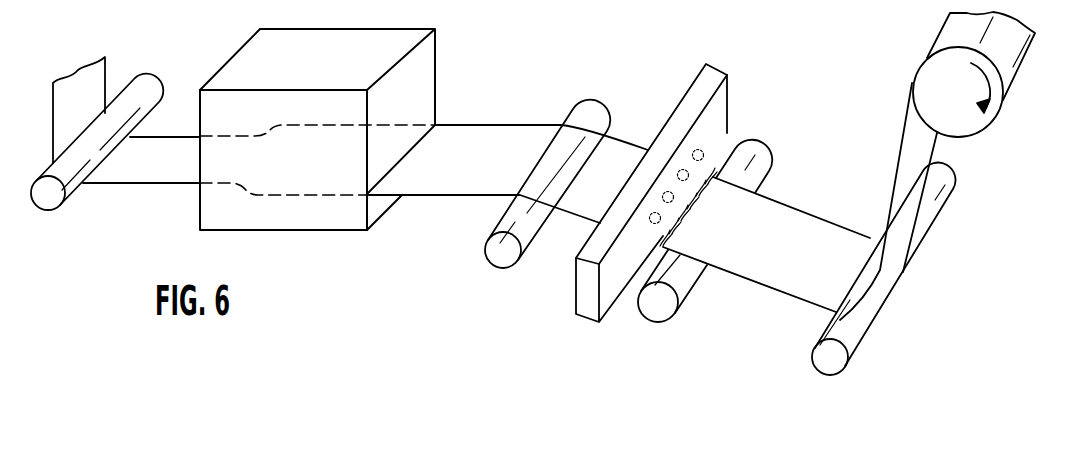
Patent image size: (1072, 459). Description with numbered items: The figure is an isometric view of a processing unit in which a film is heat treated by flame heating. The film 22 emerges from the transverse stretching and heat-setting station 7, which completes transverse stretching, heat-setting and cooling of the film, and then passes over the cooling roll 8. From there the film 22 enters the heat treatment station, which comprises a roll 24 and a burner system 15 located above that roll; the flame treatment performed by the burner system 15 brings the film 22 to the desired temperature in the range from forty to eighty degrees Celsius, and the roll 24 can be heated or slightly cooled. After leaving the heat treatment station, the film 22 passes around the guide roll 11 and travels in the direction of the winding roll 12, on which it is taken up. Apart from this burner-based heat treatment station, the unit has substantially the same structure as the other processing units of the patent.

The transverse stretching and heat-setting station 7 is at (297, 230).
The cooling roll 8 is at (495, 258).
The guide roll 11 is at (822, 362).
The winding roll 12 is at (920, 78).
The burner system 15 is at (720, 123).
The film 22 is at (482, 142).
The roll 24 is at (663, 312).